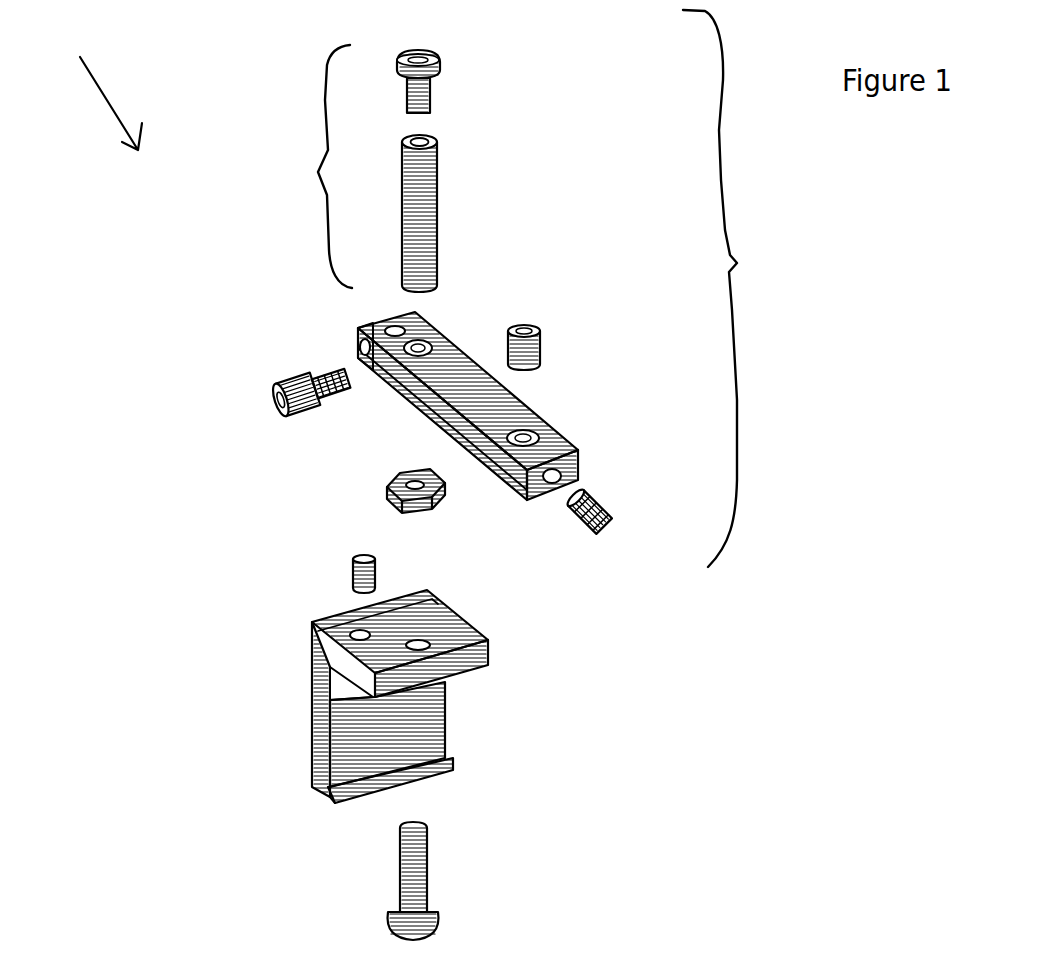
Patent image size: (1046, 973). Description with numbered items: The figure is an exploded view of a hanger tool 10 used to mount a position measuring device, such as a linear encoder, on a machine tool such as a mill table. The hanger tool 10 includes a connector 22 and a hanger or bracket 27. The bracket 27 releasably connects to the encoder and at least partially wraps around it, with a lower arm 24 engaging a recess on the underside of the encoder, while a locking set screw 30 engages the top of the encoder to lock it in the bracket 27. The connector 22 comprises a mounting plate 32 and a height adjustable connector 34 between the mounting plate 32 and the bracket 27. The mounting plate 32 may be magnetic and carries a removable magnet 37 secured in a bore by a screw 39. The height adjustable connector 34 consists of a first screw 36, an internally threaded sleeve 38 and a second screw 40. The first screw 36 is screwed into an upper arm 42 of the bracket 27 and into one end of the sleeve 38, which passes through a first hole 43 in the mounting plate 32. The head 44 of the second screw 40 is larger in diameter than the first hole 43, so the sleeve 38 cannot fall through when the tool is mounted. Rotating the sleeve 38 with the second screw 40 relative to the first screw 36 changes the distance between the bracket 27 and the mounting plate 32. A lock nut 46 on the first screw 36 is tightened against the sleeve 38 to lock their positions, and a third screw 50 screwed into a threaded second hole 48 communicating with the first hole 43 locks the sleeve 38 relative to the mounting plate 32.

The hanger tool 10 is at (92, 87).
The connector 22 is at (750, 288).
The lower arm 24 is at (453, 767).
The bracket 27 is at (493, 653).
The locking set screw 30 is at (353, 578).
The mounting plate 32 is at (570, 447).
The height adjustable connector 34 is at (298, 166).
The first screw 36 is at (427, 888).
The removable magnet 37 is at (543, 342).
The internally threaded sleeve 38 is at (440, 213).
The screw 39 is at (597, 507).
The second screw 40 is at (432, 88).
The upper arm 42 is at (328, 712).
The first hole 43 is at (418, 347).
The head 44 is at (433, 57).
The lock nut 46 is at (380, 500).
The second hole 48 is at (357, 332).
The third screw 50 is at (280, 380).